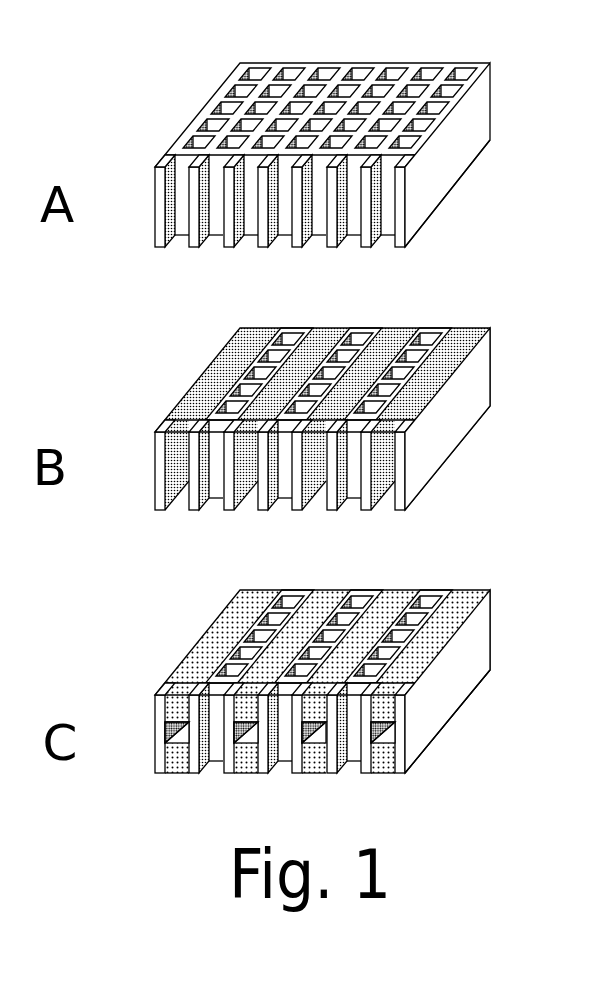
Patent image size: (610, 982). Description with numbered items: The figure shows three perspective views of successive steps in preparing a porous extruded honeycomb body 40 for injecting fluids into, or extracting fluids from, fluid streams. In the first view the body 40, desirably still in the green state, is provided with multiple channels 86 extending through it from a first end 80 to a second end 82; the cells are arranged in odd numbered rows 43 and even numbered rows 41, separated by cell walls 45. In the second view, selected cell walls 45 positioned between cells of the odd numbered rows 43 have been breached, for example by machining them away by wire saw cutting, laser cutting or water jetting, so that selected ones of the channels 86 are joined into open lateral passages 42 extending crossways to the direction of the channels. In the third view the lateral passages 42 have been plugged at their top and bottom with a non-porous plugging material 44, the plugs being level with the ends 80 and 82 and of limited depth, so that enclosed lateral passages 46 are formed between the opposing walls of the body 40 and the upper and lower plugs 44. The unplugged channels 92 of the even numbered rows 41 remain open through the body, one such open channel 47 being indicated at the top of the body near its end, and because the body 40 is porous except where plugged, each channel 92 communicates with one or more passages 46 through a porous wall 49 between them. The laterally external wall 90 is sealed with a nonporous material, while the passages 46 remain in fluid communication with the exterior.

In FIG. 1A, the honeycomb body 40 is at (313, 144).
In FIG. 1B, the honeycomb body 40 is at (313, 427).
In FIG. 1C, the honeycomb body 40 is at (319, 687).
In FIG. 1A, the even numbered rows 41 is at (364, 80).
In FIG. 1B, the even numbered rows 41 is at (300, 318).
In FIG. 1B, the open lateral passages 42 is at (203, 395).
In FIG. 1A, the odd numbered rows 43 is at (376, 262).
In FIG. 1B, the odd numbered rows 43 is at (376, 532).
In FIG. 1C, the odd numbered rows 43 is at (302, 728).
In FIG. 1C, the non-porous plugging material 44 is at (180, 680).
In FIG. 1A, the cell walls 45 is at (247, 55).
In FIG. 1C, the enclosed lateral passages 46 is at (246, 745).
In FIG. 1C, the aperture 47 is at (429, 594).
In FIG. 1C, the porous wall 49 is at (331, 740).
In FIG. 1A, the first end 80 is at (313, 144).
In FIG. 1C, the first end 80 is at (319, 687).
In FIG. 1A, the second end 82 is at (438, 243).
In FIG. 1C, the second end 82 is at (440, 760).
In FIG. 1A, the channels 86 is at (205, 128).
In FIG. 1C, the laterally external wall 90 is at (418, 696).
In FIG. 1C, the channels 92 is at (343, 617).